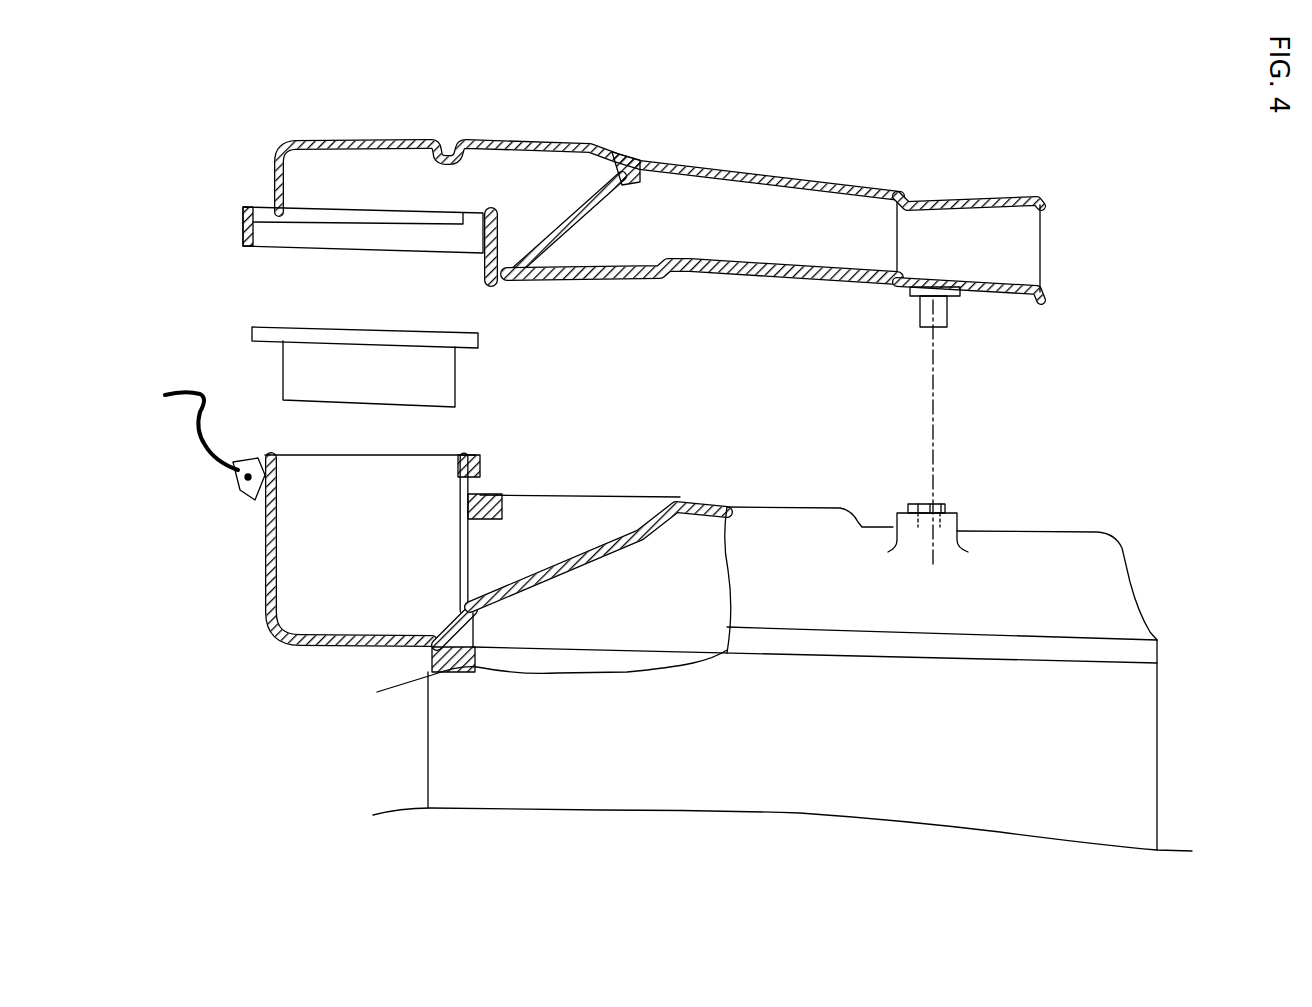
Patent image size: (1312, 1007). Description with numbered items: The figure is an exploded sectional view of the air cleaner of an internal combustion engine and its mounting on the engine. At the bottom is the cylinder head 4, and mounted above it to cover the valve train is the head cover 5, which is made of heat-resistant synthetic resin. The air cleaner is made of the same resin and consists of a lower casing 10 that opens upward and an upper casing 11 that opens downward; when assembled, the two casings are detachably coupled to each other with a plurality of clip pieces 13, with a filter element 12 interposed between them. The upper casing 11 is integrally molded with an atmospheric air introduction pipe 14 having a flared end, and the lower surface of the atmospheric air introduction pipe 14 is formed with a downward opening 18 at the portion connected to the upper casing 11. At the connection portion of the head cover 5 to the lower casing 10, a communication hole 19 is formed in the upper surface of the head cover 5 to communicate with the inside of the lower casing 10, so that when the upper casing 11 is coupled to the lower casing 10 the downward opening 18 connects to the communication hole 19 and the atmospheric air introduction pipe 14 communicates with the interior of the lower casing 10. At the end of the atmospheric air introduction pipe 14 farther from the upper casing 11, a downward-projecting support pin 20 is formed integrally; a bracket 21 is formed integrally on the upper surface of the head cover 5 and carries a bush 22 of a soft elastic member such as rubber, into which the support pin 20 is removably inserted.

The cylinder head 4 is at (1180, 793).
The head cover 5 is at (1115, 528).
The lower casing 10 is at (270, 598).
The upper casing 11 is at (315, 139).
The filter element 12 is at (262, 341).
The clip piece 13 is at (207, 456).
The atmospheric air introduction pipe 14 is at (974, 198).
The downward opening 18 is at (618, 276).
The communication hole 19 is at (553, 515).
The support pin 20 is at (952, 308).
The bracket 21 is at (962, 525).
The bush 22 is at (947, 503).